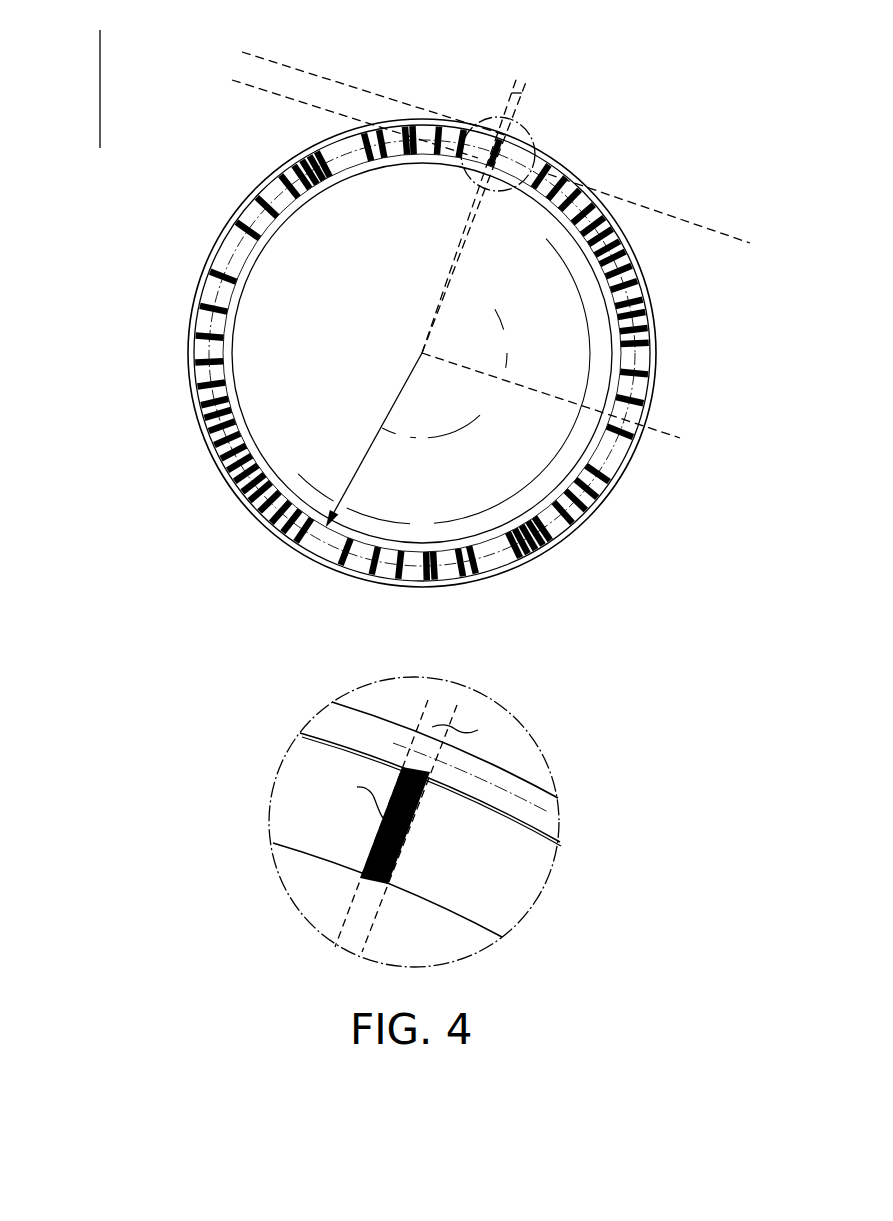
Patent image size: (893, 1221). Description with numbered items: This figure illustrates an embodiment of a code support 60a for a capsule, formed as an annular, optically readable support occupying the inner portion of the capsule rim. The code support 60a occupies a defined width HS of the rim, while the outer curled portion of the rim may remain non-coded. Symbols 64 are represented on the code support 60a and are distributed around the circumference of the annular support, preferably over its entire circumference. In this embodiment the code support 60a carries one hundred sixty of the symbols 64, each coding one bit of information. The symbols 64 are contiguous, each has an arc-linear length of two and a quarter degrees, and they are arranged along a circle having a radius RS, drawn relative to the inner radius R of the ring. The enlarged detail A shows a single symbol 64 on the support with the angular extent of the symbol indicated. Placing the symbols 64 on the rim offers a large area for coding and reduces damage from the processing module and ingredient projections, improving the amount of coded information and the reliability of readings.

The code support 60a is at (98, 90).
The symbols 64 is at (248, 243).
The detail view A is at (497, 118).
The inner radius R is at (374, 439).
The radius of the symbol circle RS is at (747, 245).
The width of the code support HS is at (258, 14).